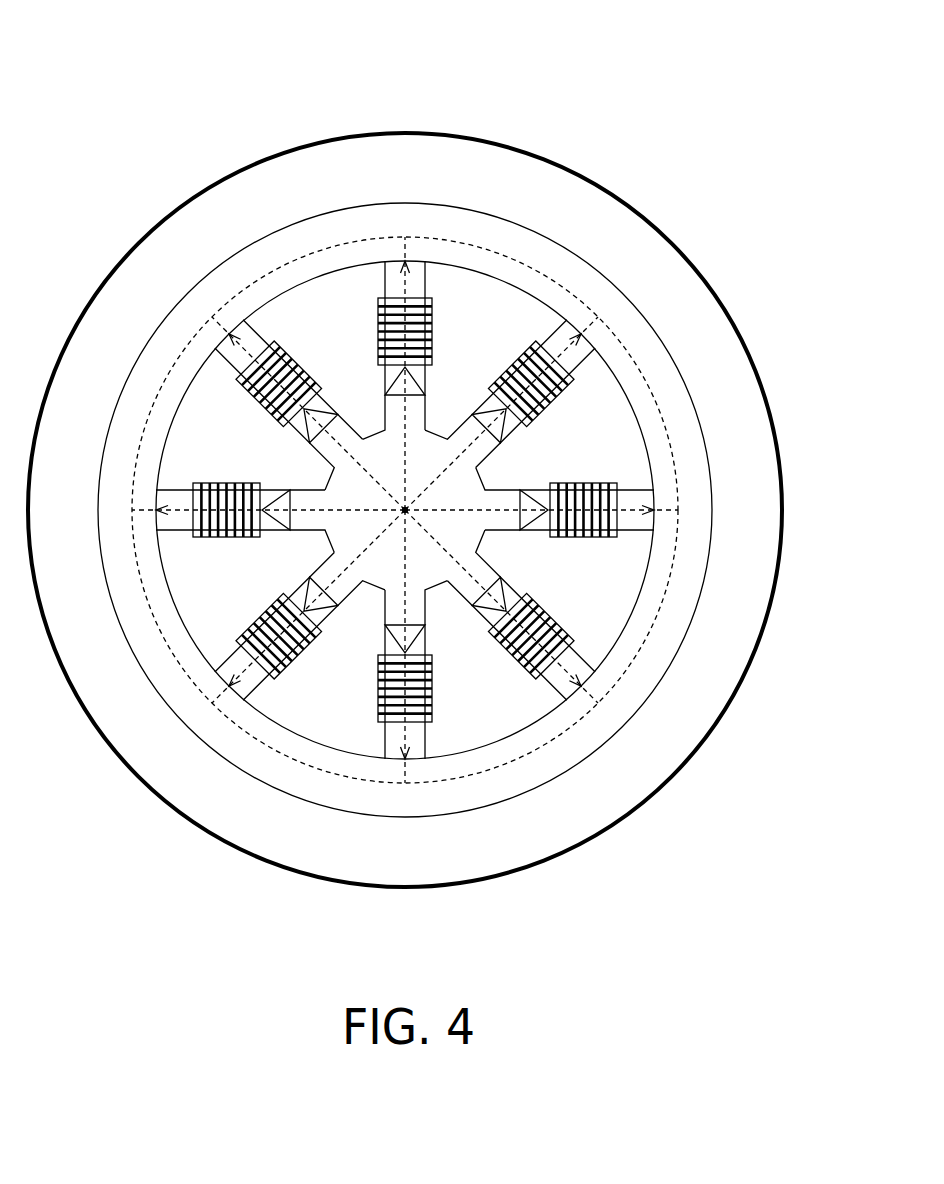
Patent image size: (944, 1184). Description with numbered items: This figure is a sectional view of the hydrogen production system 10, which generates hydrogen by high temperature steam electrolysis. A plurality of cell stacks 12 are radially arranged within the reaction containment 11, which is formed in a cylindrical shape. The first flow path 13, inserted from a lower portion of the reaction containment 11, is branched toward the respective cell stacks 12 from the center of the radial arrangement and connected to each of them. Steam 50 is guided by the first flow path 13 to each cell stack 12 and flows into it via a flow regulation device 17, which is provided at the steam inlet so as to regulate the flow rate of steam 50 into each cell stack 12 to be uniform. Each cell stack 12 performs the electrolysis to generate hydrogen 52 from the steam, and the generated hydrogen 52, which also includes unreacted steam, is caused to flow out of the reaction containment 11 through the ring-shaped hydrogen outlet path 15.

The hydrogen production system 10 is at (585, 74).
The reaction containment 11 is at (403, 129).
The cell stack 12 is at (437, 326).
The first flow path 13 is at (373, 432).
The hydrogen outlet path 15 is at (483, 212).
The flow regulation device 17 is at (414, 380).
The steam 50 is at (406, 444).
The hydrogen 52 is at (533, 270).